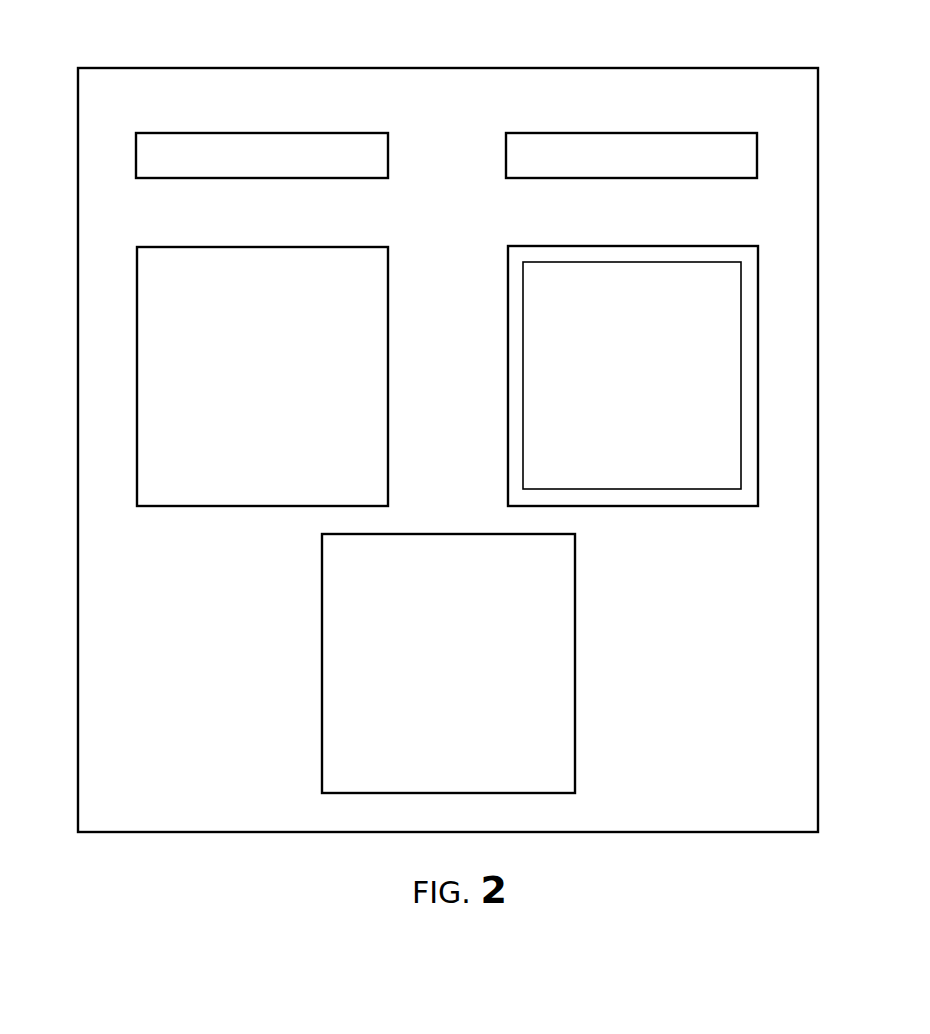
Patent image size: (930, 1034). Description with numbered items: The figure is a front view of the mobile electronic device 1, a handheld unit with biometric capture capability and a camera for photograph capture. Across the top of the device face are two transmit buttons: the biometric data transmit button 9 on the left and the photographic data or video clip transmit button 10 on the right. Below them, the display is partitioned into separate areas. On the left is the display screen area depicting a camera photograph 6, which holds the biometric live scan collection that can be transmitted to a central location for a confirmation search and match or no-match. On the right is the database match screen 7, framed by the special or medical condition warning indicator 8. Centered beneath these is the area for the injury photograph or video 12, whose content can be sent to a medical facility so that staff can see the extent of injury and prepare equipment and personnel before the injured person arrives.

The mobile electronic device 1 is at (178, 68).
The mobile device display screen partitioned area depicting a camera photograph 6 is at (183, 335).
The mobile device display screen partitioned area depicting a database match screen 7 is at (612, 370).
The special or medical condition warning indicator 8 is at (513, 455).
The biometric data transmit button 9 is at (318, 133).
The photographic data or video clip transmit button 10 is at (686, 133).
The injury photograph or video 12 is at (547, 713).